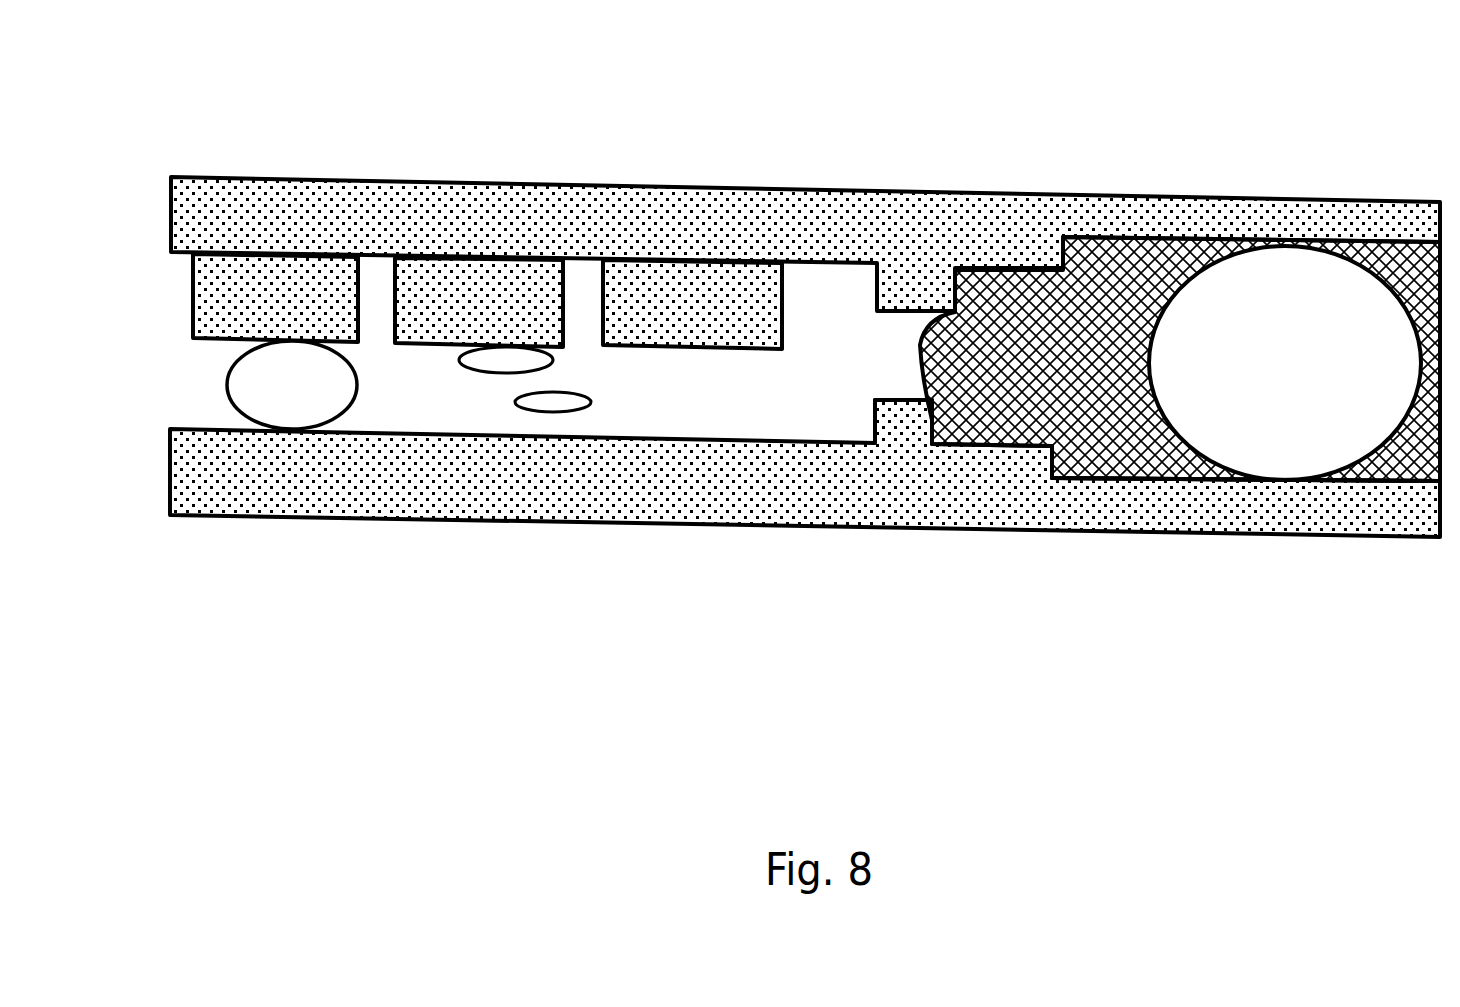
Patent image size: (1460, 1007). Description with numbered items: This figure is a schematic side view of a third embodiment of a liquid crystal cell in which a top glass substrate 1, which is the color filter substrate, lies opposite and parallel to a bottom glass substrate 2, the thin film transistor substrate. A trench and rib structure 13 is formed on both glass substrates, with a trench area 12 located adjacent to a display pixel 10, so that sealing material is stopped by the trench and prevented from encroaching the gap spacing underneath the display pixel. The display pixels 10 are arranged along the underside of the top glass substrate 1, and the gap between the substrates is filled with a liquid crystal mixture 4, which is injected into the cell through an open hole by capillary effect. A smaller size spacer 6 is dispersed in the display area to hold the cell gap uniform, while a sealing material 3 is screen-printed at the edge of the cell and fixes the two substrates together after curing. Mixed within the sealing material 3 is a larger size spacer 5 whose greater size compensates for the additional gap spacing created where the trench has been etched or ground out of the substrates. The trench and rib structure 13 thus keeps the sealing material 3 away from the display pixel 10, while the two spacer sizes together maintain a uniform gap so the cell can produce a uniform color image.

The top glass substrate 1 is at (743, 222).
The bottom glass substrate 2 is at (666, 485).
The sealing material 3 is at (1067, 362).
The liquid crystal mixture 4 is at (557, 402).
The larger size spacer 5 is at (1315, 317).
The smaller size spacer 6 is at (288, 397).
The display pixel 10 is at (473, 290).
The trench area 12 is at (1120, 473).
The trench and rib structure 13 is at (909, 400).